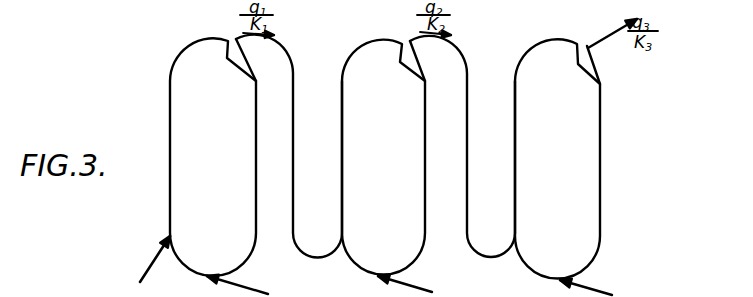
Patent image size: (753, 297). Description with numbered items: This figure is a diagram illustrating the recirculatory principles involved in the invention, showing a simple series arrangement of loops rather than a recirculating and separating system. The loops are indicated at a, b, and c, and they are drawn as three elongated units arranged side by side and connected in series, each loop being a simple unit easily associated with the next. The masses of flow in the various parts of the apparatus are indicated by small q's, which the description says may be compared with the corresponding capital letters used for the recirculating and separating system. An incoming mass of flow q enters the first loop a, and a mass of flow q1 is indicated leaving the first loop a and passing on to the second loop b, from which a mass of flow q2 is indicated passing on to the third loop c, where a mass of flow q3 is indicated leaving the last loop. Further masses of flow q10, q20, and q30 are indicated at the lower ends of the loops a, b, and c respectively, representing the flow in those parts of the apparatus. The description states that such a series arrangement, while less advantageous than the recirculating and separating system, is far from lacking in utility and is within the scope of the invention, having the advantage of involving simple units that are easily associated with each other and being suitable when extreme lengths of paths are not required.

The loop a is at (170, 107).
The loop b is at (343, 107).
The loop c is at (515, 107).
The mass of flow q is at (177, 130).
The mass of flow q1 is at (263, 128).
The mass of flow q2 is at (433, 133).
The mass of flow q3 is at (607, 137).
The mass of flow q10 is at (244, 283).
The mass of flow q20 is at (416, 279).
The mass of flow q30 is at (596, 282).